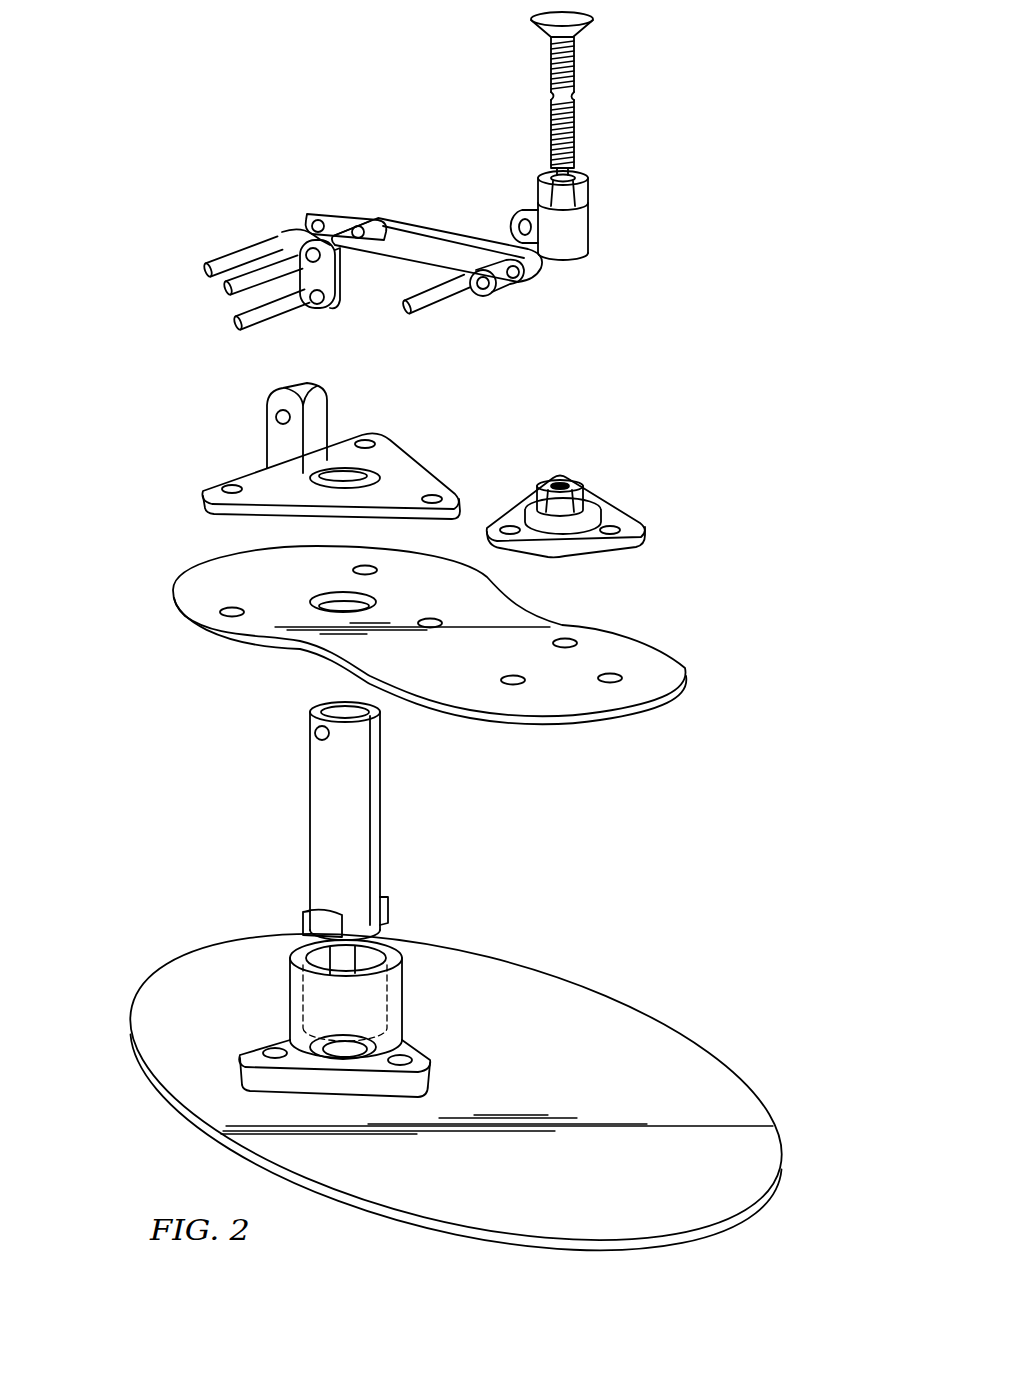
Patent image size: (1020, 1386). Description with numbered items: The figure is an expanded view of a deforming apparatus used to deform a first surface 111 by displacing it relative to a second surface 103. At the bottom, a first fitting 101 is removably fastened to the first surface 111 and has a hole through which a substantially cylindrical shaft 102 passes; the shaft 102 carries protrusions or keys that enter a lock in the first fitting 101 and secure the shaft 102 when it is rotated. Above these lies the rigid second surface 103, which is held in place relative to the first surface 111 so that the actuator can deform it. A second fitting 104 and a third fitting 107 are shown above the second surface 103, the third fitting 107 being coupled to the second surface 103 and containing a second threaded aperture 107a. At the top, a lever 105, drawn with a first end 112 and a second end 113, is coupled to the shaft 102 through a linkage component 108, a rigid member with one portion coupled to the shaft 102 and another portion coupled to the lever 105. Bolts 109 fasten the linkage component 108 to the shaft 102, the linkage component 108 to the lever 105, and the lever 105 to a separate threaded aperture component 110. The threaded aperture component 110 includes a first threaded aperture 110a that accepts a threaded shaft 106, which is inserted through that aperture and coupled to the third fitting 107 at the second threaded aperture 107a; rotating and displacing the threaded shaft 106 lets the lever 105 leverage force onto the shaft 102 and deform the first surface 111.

The first fitting 101 is at (385, 949).
The shaft 102 is at (310, 767).
The second surface 103 is at (200, 581).
The second fitting 104 is at (244, 469).
The lever 105 is at (412, 224).
The threaded shaft 106 is at (576, 63).
The third fitting 107 is at (631, 491).
The second threaded aperture 107a is at (640, 453).
The linkage component 108 is at (335, 301).
The bolts 109 is at (497, 319).
The threaded aperture component 110 is at (596, 217).
The first threaded aperture 110a is at (552, 163).
The first surface 111 is at (626, 1029).
The first end 112 is at (312, 222).
The second end 113 is at (548, 263).